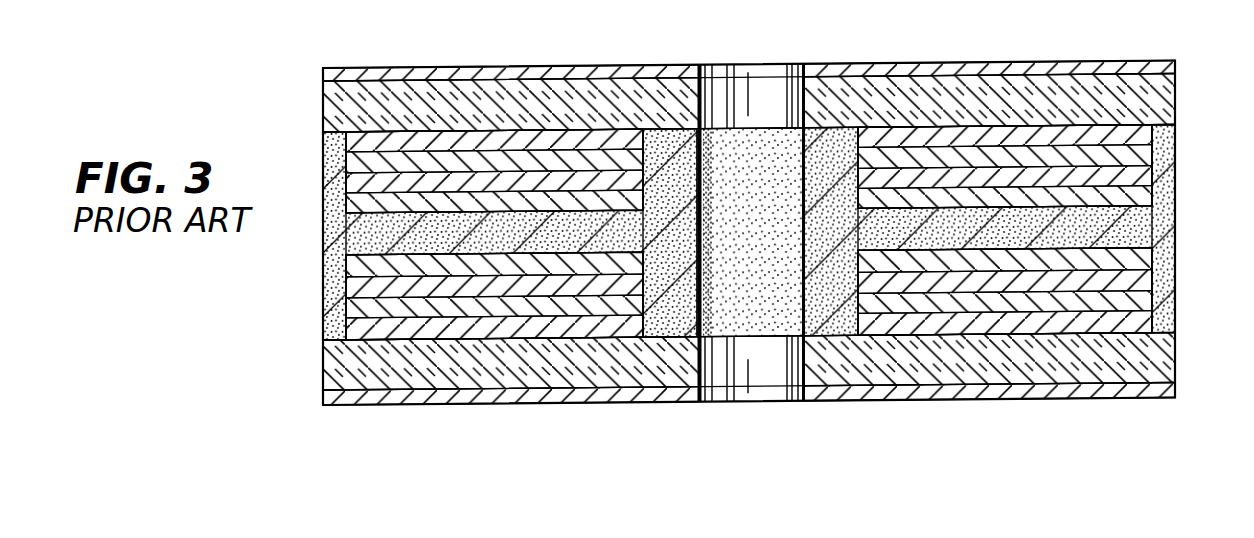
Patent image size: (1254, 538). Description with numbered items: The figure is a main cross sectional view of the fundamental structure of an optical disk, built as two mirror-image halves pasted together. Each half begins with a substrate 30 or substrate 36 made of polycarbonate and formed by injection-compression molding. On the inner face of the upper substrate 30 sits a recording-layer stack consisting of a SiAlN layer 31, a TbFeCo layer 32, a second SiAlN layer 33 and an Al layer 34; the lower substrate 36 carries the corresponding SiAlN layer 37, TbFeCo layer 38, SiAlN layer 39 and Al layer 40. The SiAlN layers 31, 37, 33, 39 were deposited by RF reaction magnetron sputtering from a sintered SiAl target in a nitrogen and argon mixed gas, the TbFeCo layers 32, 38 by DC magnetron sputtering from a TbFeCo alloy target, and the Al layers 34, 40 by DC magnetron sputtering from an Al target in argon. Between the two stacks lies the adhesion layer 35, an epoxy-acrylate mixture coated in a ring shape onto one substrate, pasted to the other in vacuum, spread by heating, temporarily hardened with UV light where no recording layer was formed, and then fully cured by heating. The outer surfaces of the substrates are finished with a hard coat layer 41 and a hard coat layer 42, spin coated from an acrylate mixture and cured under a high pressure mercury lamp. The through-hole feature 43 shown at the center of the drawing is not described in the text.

The substrate 30 is at (1160, 96).
The SiAlN layer 31 is at (1177, 136).
The TbFeCo layer 32 is at (1173, 156).
The SiAlN layer 33 is at (1173, 183).
The Al layer 34 is at (1167, 205).
The adhesion layer 35 is at (1157, 231).
The substrate 36 is at (1175, 373).
The SiAlN layer 37 is at (1175, 345).
The TbFeCo layer 38 is at (1175, 315).
The SiAlN layer 39 is at (1175, 288).
The Al layer 40 is at (1175, 266).
The hard coat layer 41 is at (1173, 68).
The hard coat layer 42 is at (1177, 395).
The plated through hole via 43 is at (753, 90).